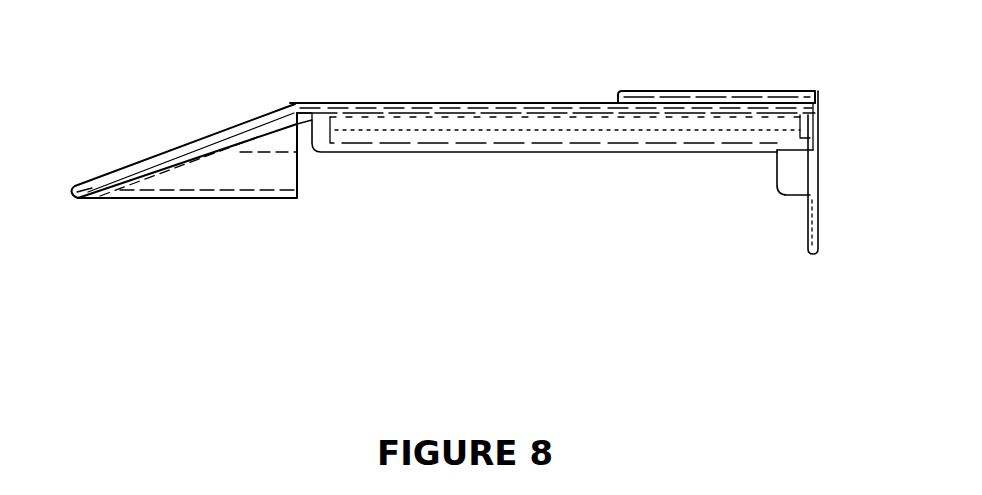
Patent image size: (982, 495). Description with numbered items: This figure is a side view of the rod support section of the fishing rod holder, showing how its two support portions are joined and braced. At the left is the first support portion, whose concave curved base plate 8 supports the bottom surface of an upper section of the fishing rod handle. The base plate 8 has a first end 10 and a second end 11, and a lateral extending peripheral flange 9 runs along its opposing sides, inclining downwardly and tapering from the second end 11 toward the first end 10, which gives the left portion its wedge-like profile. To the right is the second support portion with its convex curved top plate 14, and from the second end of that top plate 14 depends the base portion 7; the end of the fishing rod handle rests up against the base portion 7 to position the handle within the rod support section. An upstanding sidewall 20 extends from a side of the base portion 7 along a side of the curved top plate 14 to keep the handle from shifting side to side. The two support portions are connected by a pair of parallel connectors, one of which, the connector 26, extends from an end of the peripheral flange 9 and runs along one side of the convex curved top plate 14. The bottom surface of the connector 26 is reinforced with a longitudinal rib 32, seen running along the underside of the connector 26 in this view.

The base portion 7 is at (818, 215).
The concave curved base plate 8 is at (223, 190).
The lateral extending peripheral flange 9 is at (137, 168).
The first end 10 is at (103, 198).
The second end 11 is at (297, 175).
The convex curved top plate 14 is at (715, 100).
The upstanding sidewall 20 is at (792, 167).
The connector 26 is at (427, 108).
The longitudinal rib 32 is at (500, 143).